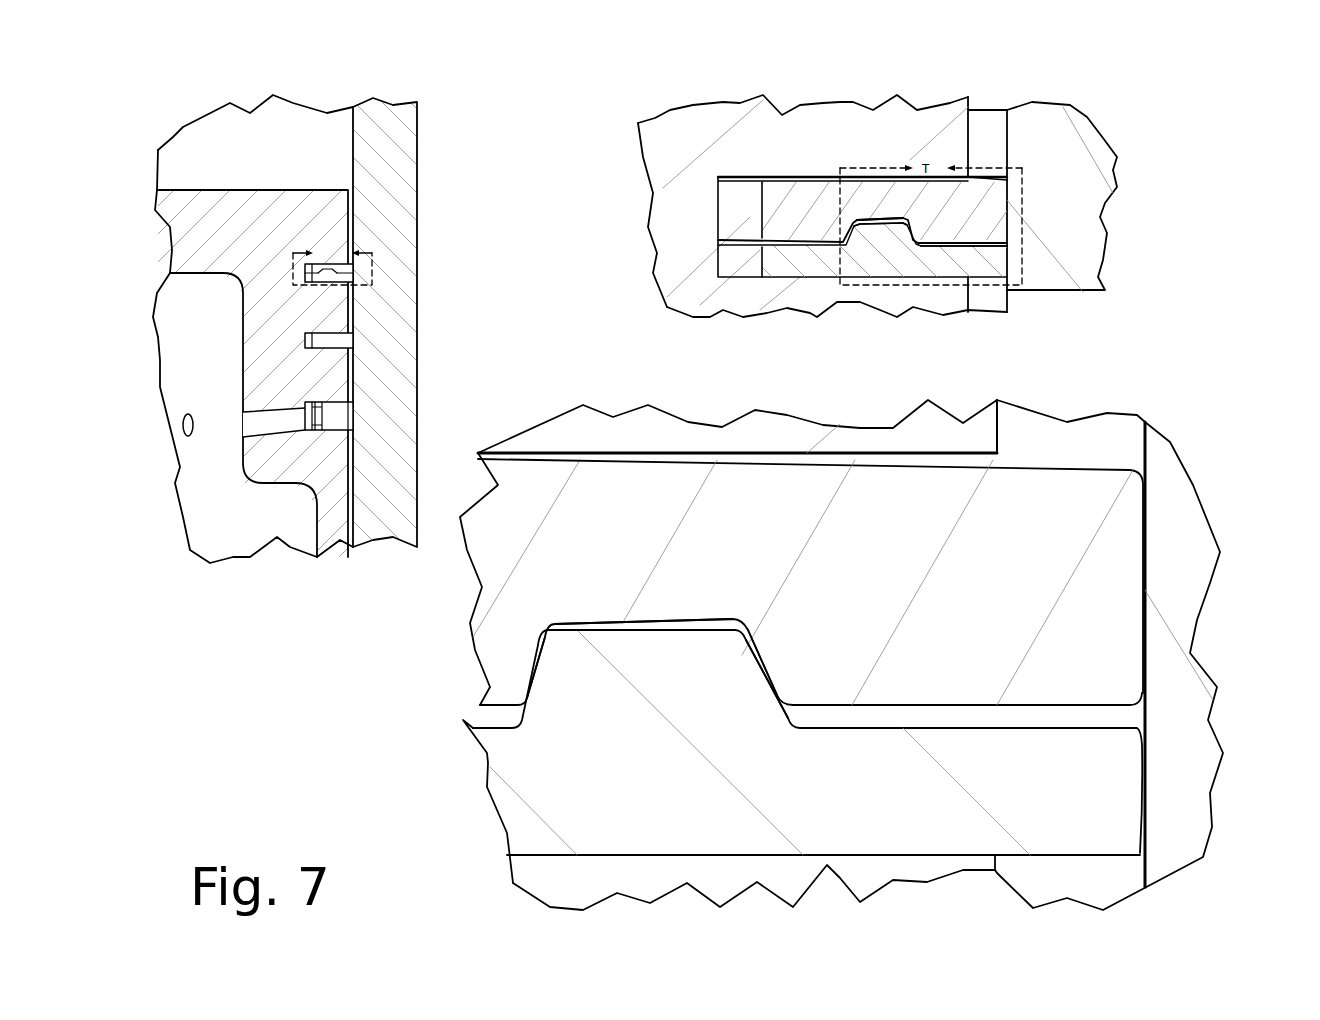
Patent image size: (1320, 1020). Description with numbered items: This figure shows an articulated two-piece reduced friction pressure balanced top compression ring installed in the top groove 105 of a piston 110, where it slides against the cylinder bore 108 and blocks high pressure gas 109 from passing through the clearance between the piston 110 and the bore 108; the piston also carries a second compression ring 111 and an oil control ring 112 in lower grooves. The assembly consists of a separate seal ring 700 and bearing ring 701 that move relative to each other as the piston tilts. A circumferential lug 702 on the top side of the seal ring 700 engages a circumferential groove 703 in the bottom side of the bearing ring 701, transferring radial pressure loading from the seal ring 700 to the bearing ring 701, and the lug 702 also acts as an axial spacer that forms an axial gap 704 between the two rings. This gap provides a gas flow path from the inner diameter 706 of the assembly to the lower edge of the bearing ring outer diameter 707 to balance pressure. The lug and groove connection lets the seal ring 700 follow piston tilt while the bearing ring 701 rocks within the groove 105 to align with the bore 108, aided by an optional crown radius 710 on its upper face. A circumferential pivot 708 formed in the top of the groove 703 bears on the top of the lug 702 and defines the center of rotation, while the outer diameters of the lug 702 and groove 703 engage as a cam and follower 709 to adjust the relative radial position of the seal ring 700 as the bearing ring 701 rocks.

The top groove 105 is at (352, 250).
The cylinder bore 108 is at (393, 112).
The high pressure gas 109 is at (345, 178).
The piston 110 is at (268, 215).
The second compression ring 111 is at (333, 340).
The oil control ring 112 is at (335, 417).
The seal ring 700 is at (333, 276).
The bearing ring 701 is at (347, 268).
The circumferential lug 702 is at (882, 233).
The circumferential groove 703 is at (885, 220).
The axial gap 704 is at (957, 242).
The inner diameter 706 is at (760, 217).
The outer diameter 707 is at (1008, 208).
The circumferential pivot 708 is at (583, 627).
The follower 709 is at (757, 670).
The crown radius 710 is at (935, 467).